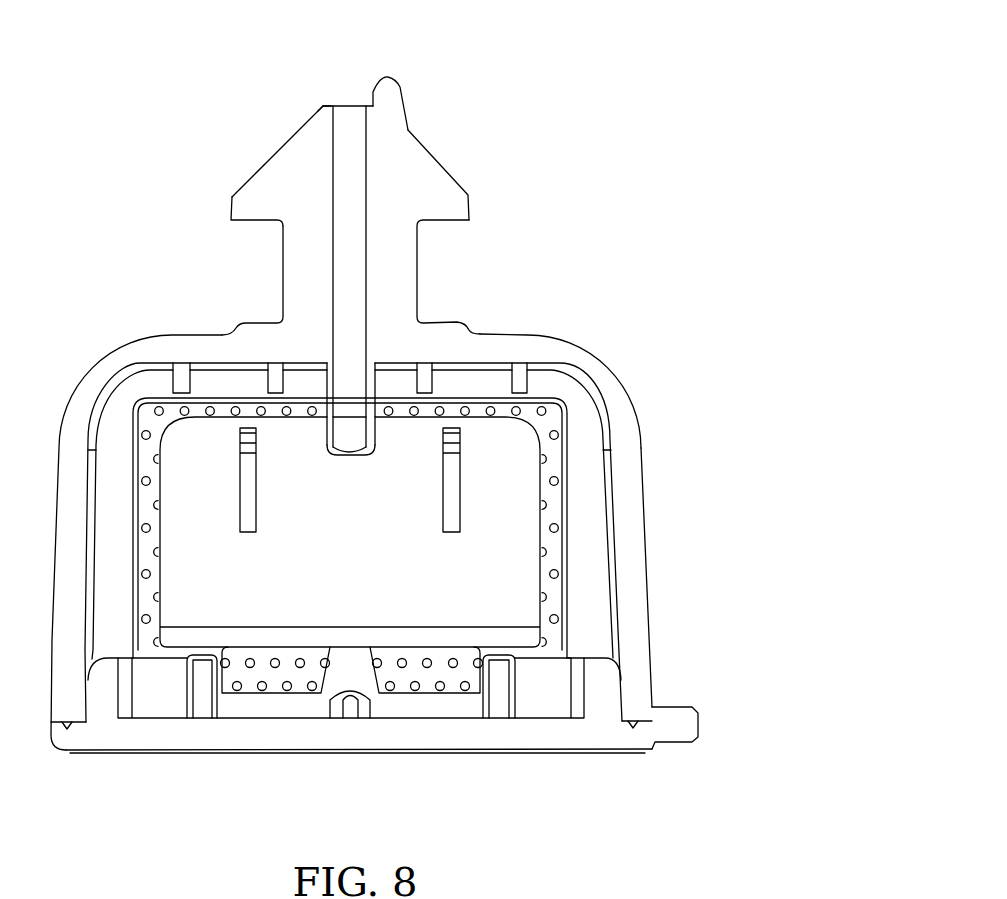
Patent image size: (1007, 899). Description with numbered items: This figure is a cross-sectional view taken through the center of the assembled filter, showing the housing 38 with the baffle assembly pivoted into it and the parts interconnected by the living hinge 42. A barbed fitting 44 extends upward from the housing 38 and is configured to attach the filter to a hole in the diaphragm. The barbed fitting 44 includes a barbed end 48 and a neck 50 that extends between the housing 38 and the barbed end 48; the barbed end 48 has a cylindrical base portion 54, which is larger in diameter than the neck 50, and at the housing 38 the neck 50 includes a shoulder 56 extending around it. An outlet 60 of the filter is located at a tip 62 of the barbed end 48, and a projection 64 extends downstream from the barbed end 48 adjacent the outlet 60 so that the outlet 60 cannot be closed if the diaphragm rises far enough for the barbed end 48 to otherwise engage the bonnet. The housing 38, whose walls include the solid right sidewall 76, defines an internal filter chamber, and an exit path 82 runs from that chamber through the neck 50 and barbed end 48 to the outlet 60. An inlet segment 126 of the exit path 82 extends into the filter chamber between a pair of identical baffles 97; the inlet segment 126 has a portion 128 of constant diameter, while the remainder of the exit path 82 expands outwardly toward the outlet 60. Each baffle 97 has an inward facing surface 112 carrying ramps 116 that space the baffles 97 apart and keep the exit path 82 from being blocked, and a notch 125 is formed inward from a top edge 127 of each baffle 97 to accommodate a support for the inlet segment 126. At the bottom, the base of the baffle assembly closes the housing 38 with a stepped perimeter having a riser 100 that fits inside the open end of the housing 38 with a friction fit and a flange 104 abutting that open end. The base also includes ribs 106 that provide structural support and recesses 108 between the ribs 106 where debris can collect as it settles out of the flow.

The housing 38 is at (639, 425).
The living hinge 42 is at (700, 713).
The barbed fitting 44 is at (434, 160).
The barbed end 48 is at (273, 146).
The neck 50 is at (281, 262).
The cylindrical base portion 54 is at (231, 209).
The shoulder 56 is at (447, 322).
The outlet 60 is at (343, 105).
The tip 62 is at (323, 104).
The projection 64 is at (398, 80).
The right sidewall 76 is at (648, 495).
The exit path 82 is at (342, 252).
The baffles 97 is at (520, 585).
The riser 100 is at (455, 690).
The flange 104 is at (633, 750).
The ribs 106 is at (208, 655).
The recesses 108 is at (150, 705).
The inward facing surface 112 is at (222, 602).
The ramps 116 is at (247, 533).
The notch 125 is at (377, 443).
The inlet segment 126 is at (353, 409).
The top edge 127 is at (221, 416).
The constant diameter portion 128 is at (345, 432).